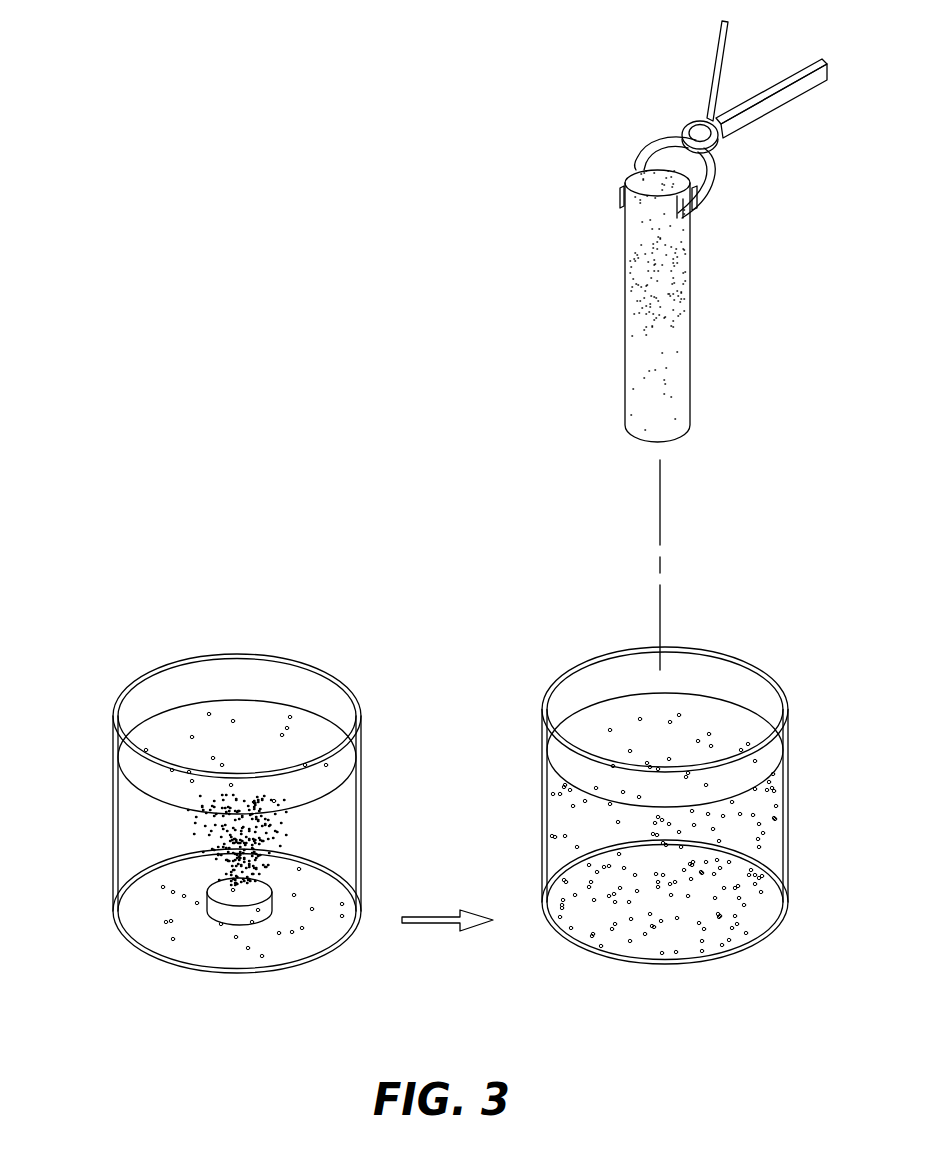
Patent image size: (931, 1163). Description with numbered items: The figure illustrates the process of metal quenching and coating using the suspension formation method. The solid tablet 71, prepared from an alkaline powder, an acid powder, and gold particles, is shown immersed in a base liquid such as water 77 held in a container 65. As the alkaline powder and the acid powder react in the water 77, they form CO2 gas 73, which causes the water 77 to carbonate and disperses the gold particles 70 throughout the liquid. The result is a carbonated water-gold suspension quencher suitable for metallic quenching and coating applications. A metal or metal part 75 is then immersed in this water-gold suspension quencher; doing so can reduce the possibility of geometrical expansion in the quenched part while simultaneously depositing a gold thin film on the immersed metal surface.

The container 65 is at (113, 777).
The gold particles 70 is at (205, 873).
The solid tablet 71 is at (242, 922).
The CO2 gas 73 is at (322, 803).
The metal part 75 is at (690, 347).
The water 77 is at (128, 865).